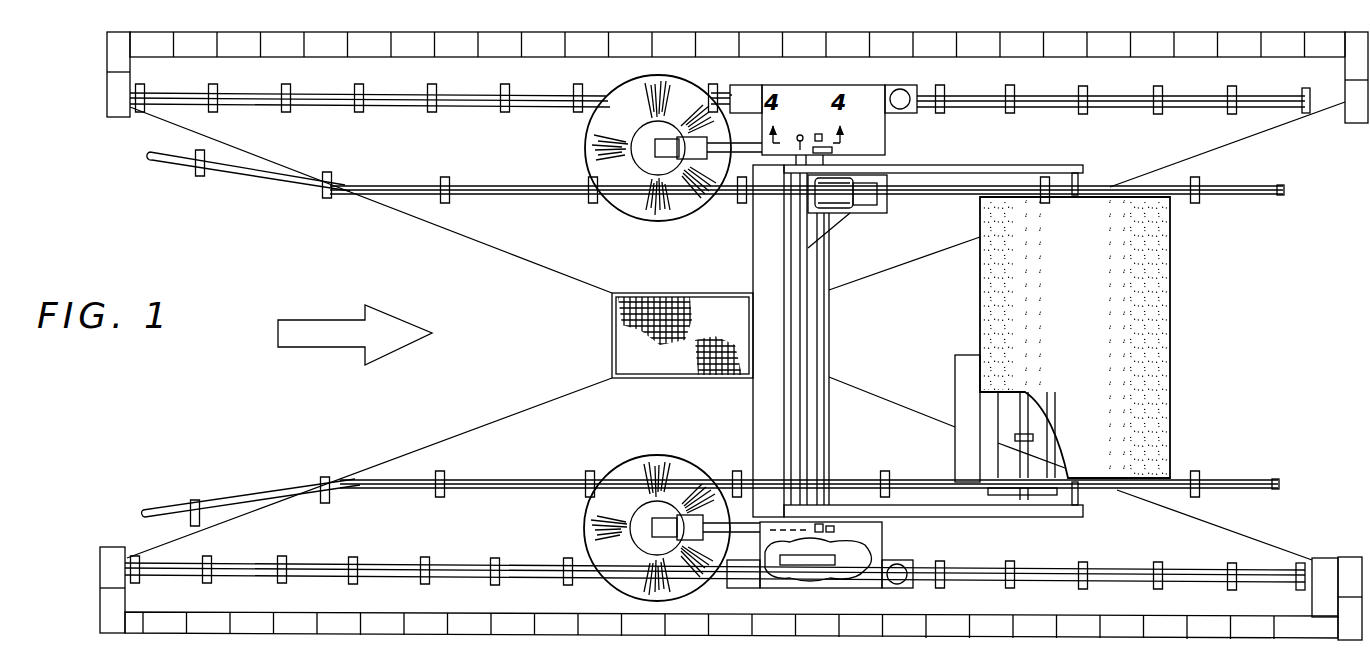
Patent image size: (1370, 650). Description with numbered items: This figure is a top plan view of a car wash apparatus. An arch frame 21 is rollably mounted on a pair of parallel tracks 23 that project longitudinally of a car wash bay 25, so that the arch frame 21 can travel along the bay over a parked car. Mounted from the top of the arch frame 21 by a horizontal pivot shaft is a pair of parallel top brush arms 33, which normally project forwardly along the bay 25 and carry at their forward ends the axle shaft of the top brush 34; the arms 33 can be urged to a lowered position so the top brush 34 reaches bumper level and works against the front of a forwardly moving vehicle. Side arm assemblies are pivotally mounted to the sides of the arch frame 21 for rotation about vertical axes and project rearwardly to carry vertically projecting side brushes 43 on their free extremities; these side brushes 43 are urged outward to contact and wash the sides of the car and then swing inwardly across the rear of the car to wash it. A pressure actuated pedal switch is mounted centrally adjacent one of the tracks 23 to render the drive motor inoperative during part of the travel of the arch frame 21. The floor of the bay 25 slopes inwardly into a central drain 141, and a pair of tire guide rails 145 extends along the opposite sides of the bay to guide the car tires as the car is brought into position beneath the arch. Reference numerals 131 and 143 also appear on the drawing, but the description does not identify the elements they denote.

The arch frame 21 is at (745, 242).
The parallel tracks 23 is at (1140, 92).
The car wash bay 25 is at (1240, 330).
The top brush arms 33 is at (718, 152).
The top brush 34 is at (1160, 262).
The side brushes 43 is at (637, 212).
The drive motor 131 is at (808, 568).
The central drain 141 is at (612, 330).
The control unit 143 is at (897, 605).
The tire guide rails 145 is at (395, 186).